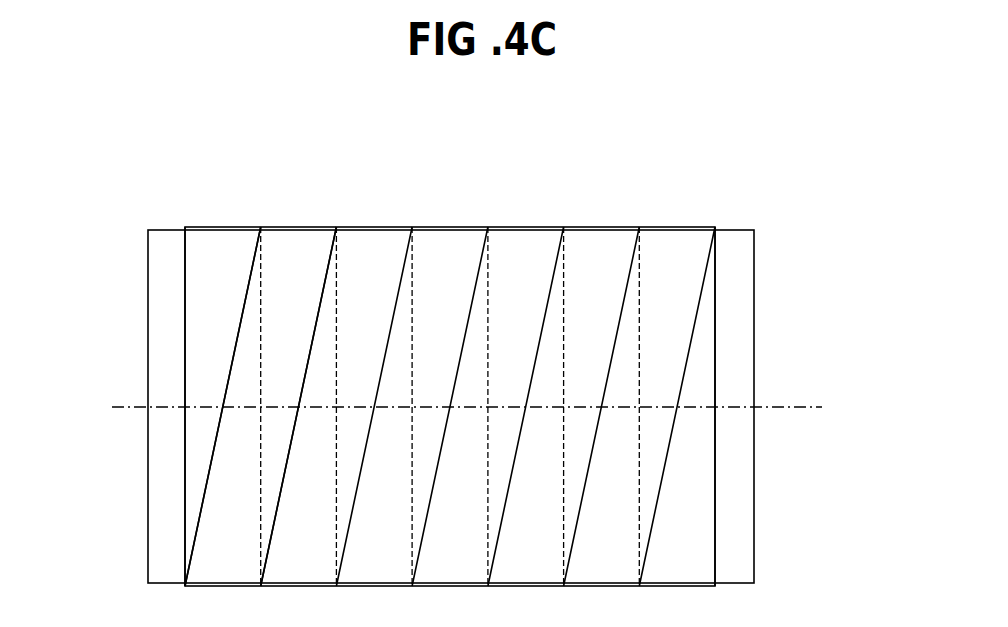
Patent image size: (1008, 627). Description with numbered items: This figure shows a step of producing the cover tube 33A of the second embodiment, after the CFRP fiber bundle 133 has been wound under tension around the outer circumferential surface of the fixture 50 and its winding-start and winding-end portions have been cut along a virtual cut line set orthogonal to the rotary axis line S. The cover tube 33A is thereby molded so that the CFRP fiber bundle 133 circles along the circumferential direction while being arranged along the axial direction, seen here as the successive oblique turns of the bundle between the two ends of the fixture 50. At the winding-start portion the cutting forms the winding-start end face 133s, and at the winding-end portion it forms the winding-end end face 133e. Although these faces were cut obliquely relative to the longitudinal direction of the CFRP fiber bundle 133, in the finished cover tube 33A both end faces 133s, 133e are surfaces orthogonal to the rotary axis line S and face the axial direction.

The fixture 50 is at (754, 277).
The cover tube 33A is at (494, 190).
The CFRP fiber bundle 133 is at (222, 227).
The winding-start end face 133s is at (185, 300).
The winding-end end face 133e is at (717, 335).
The rotary axis line S is at (785, 407).